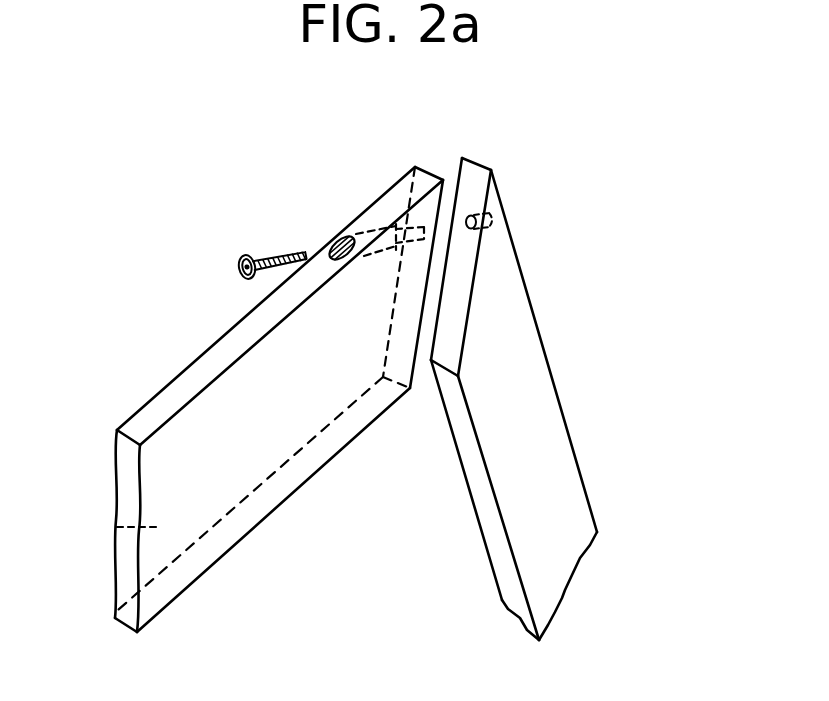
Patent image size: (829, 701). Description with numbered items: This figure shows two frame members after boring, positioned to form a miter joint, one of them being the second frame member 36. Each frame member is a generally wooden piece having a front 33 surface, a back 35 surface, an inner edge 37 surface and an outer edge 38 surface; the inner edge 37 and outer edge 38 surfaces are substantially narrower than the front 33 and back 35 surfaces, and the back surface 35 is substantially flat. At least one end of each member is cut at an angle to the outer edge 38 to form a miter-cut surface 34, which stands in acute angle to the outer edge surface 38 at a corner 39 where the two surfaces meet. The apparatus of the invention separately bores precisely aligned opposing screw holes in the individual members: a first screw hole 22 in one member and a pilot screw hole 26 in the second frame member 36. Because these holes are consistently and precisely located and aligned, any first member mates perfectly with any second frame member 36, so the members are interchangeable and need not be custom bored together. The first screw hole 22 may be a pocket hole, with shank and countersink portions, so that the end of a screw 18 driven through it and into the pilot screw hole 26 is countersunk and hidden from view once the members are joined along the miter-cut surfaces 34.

The screw 18 is at (247, 252).
The first screw hole 22 is at (370, 228).
The pilot screw hole 26 is at (490, 208).
The front surface 33 is at (530, 502).
The miter-cut surface 34 is at (477, 182).
The back surface 35 is at (113, 532).
The second frame member 36 is at (543, 347).
The inner edge surface 37 is at (473, 465).
The outer edge surface 38 is at (157, 403).
The corner 39 is at (472, 160).